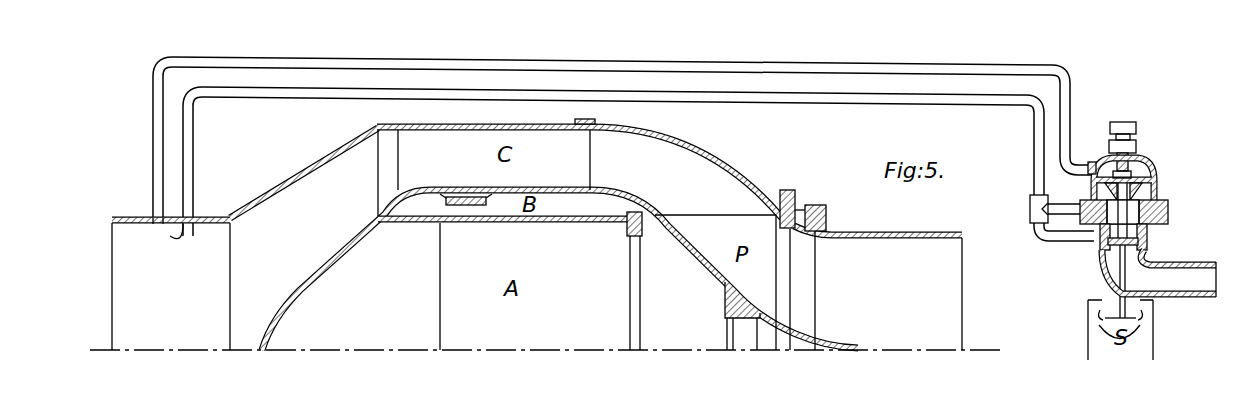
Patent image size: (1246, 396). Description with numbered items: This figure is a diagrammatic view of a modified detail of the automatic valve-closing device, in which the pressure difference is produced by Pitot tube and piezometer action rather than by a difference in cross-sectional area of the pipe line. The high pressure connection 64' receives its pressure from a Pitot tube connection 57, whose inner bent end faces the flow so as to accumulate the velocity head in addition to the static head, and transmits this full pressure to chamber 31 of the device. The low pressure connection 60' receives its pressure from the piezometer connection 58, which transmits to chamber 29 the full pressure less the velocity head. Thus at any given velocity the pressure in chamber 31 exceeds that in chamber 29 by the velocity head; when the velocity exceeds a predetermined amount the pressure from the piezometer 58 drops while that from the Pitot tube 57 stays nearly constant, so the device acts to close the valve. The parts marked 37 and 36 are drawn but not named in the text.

The low pressure connection 60' is at (592, 126).
The high pressure connection 64' is at (641, 164).
The piezometer connection 58 is at (157, 221).
The Pitot tube connection 57 is at (188, 230).
The chamber 29 is at (1136, 171).
The chamber 31 is at (1136, 209).
The valve disc 37 is at (1142, 245).
The valve outlet 36 is at (1104, 258).